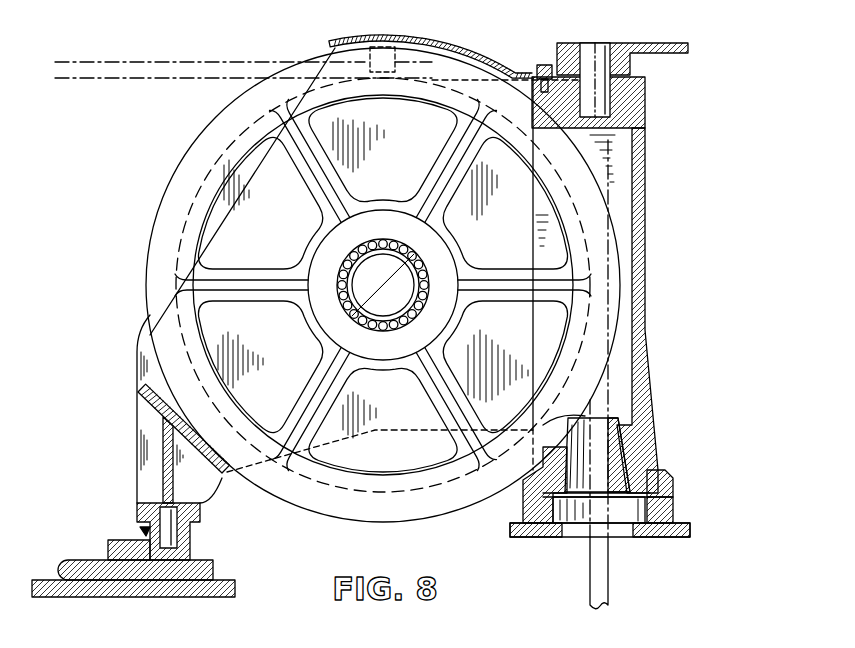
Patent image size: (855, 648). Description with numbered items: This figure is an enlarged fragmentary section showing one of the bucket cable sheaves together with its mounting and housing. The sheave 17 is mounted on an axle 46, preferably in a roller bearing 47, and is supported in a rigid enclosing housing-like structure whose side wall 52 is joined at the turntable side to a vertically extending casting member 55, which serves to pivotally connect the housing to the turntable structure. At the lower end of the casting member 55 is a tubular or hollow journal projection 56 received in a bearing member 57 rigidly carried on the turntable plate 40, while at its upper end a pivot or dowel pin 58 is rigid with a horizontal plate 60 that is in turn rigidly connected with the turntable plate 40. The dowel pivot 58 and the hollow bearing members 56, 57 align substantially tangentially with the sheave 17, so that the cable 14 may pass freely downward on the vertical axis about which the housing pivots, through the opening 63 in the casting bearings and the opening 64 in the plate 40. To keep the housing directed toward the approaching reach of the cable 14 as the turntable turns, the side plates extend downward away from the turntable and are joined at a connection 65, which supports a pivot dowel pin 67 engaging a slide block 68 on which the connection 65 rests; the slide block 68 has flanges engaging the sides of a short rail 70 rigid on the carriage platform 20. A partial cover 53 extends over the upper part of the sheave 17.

The cable 14 is at (104, 80).
The sheave 17 is at (302, 500).
The horizontal platform 20 is at (217, 592).
The turntable plate 40 is at (684, 538).
The axle 46 is at (368, 297).
The roller bearing 47 is at (352, 262).
The side wall 52 is at (140, 372).
The partial cover 53 is at (434, 51).
The casting member 55 is at (644, 190).
The hollow journal projection 56 is at (673, 478).
The bearing member 57 is at (675, 513).
The pivot pin 58 is at (612, 100).
The horizontal plate 60 is at (690, 52).
The opening 63 is at (620, 452).
The opening 64 is at (572, 538).
The connection 65 is at (140, 503).
The pivot dowel pin 67 is at (178, 529).
The slide block 68 is at (112, 546).
The short rail 70 is at (64, 568).